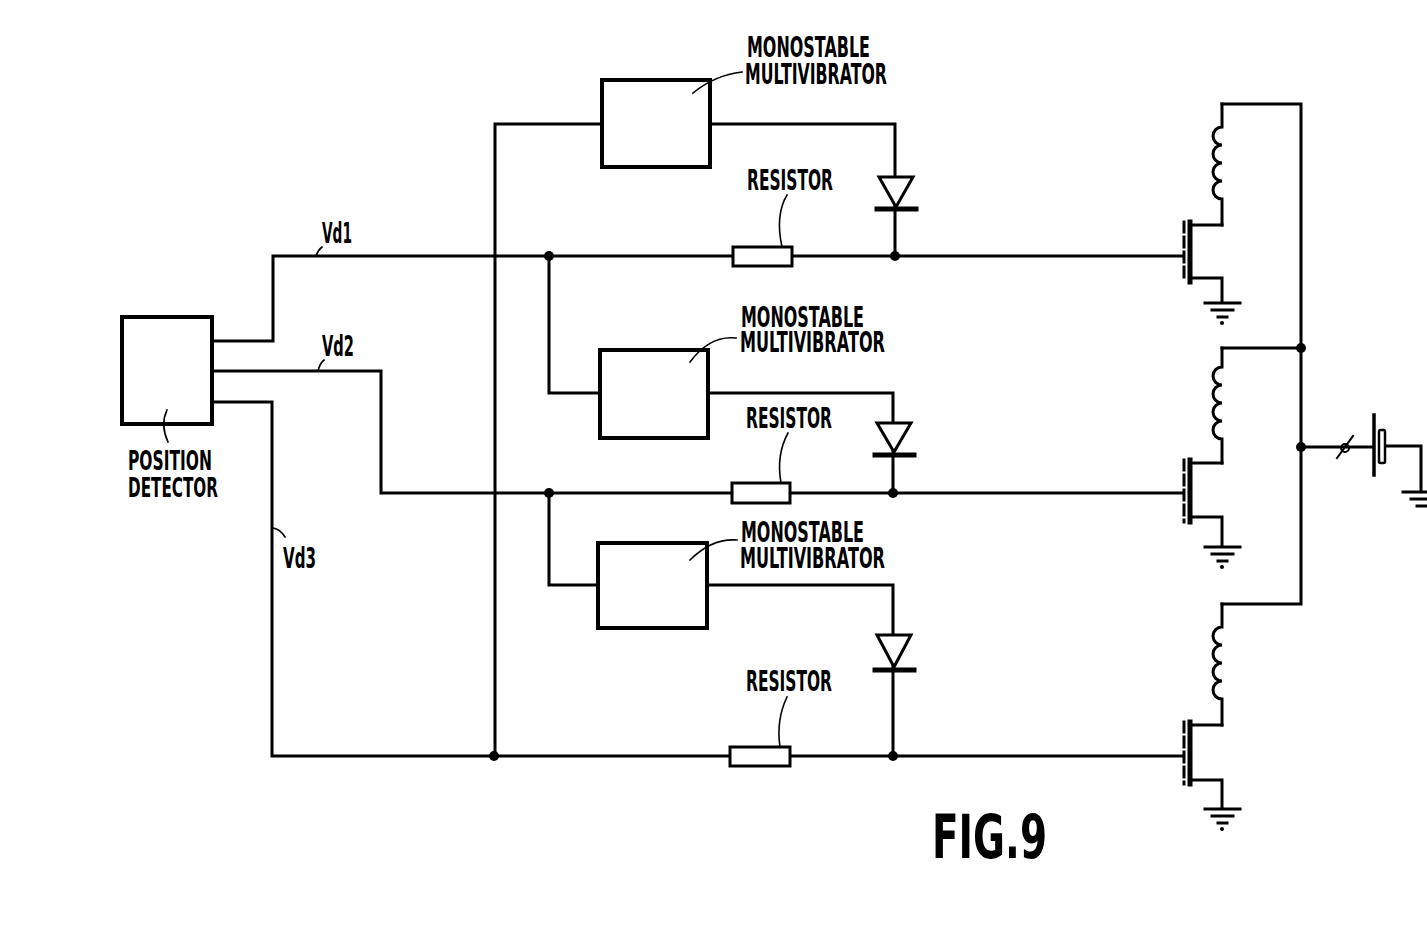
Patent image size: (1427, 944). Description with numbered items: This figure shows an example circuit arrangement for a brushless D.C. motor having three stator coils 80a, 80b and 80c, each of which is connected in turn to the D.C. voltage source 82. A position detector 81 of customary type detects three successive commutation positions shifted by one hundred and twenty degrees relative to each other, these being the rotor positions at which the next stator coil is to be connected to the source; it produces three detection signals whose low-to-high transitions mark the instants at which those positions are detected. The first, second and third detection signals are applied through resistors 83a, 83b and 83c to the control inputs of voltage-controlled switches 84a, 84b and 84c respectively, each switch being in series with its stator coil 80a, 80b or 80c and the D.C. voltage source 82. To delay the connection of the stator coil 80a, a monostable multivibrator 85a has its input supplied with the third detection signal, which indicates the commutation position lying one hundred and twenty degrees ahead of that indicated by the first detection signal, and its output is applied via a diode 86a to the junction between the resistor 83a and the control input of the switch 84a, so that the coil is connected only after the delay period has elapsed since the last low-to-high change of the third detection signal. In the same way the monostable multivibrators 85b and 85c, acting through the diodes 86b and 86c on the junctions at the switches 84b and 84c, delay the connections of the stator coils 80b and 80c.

The position detector 81 is at (155, 317).
The monostable multivibrator 85a is at (641, 80).
The monostable multivibrator 85b is at (630, 350).
The monostable multivibrator 85c is at (621, 628).
The resistor 83a is at (753, 247).
The resistor 83b is at (753, 483).
The resistor 83c is at (755, 747).
The diode 86a is at (910, 182).
The diode 86b is at (906, 428).
The diode 86c is at (908, 644).
The voltage-controlled switch 84a is at (1195, 252).
The voltage-controlled switch 84b is at (1195, 489).
The voltage-controlled switch 84c is at (1195, 754).
The stator coil 80a is at (1210, 148).
The stator coil 80b is at (1210, 405).
The stator coil 80c is at (1210, 652).
The D.C. voltage source 82 is at (1384, 432).